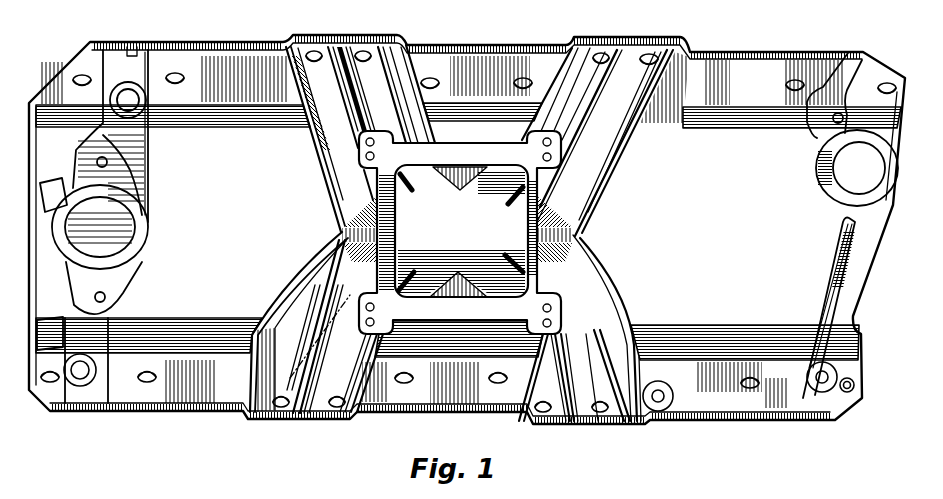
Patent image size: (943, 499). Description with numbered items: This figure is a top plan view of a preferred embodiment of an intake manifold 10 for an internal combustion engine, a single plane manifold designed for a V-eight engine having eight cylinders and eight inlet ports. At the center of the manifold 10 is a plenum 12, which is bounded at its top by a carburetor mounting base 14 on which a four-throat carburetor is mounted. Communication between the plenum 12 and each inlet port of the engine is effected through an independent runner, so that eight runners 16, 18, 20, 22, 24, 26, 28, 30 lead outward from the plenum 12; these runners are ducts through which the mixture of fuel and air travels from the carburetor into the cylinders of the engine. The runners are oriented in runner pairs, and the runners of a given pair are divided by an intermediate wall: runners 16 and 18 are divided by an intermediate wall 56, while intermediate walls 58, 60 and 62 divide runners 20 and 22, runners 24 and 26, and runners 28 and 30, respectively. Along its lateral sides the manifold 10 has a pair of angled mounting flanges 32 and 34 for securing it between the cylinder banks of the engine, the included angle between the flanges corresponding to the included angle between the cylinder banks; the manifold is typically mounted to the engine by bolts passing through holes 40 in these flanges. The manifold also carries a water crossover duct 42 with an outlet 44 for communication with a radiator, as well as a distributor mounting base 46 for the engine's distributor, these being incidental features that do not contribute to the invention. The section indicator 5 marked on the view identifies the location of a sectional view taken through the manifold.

The intake manifold 10 is at (710, 436).
The plenum 12 is at (470, 244).
The carburetor mounting base 14 is at (468, 311).
The runner 16 is at (323, 161).
The runner 18 is at (410, 137).
The runner 20 is at (514, 130).
The runner 22 is at (620, 171).
The runner 24 is at (607, 307).
The runner 26 is at (548, 420).
The runner 28 is at (356, 417).
The runner 30 is at (270, 413).
The angled mounting flange 32 is at (768, 42).
The angled mounting flange 34 is at (767, 416).
The holes 40 is at (178, 73).
The water crossover duct 42 is at (141, 170).
The outlet 44 is at (148, 240).
The distributor mounting base 46 is at (823, 192).
The intermediate wall 56 is at (411, 196).
The intermediate wall 58 is at (514, 211).
The intermediate wall 60 is at (513, 255).
The intermediate wall 62 is at (413, 271).
The section line indicator 5 is at (330, 242).